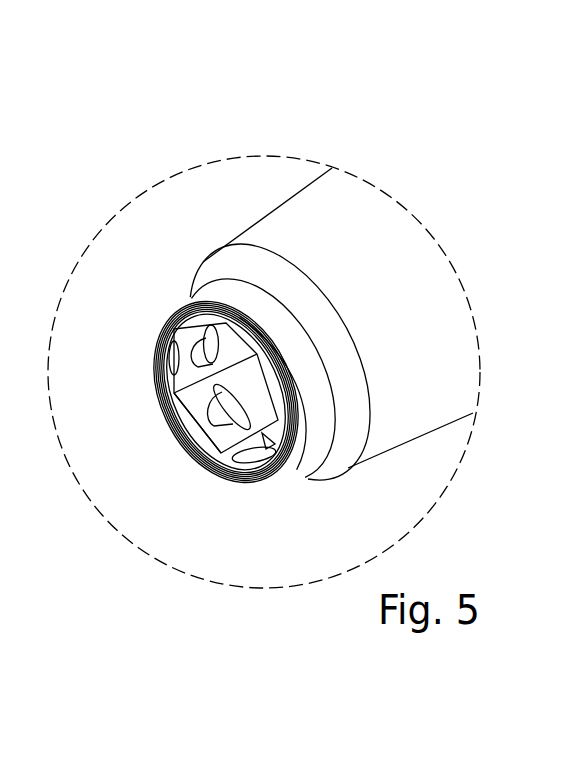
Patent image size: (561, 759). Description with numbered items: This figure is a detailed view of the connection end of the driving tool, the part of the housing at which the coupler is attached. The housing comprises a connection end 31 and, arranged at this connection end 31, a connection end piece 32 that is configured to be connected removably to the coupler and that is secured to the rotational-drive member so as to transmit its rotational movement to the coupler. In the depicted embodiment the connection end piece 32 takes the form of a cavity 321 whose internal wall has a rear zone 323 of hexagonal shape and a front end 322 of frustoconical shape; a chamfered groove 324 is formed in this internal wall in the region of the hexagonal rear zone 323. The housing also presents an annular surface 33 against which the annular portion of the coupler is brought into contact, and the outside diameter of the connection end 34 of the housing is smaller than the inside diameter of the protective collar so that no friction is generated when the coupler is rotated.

The connection end 31 is at (291, 114).
The connection end piece 32 is at (157, 320).
The annular surface 33 is at (384, 302).
The connection end 34 is at (262, 310).
The cavity 321 is at (228, 378).
The front end 322 is at (180, 427).
The rear zone 323 is at (260, 397).
The chamfered groove 324 is at (222, 460).